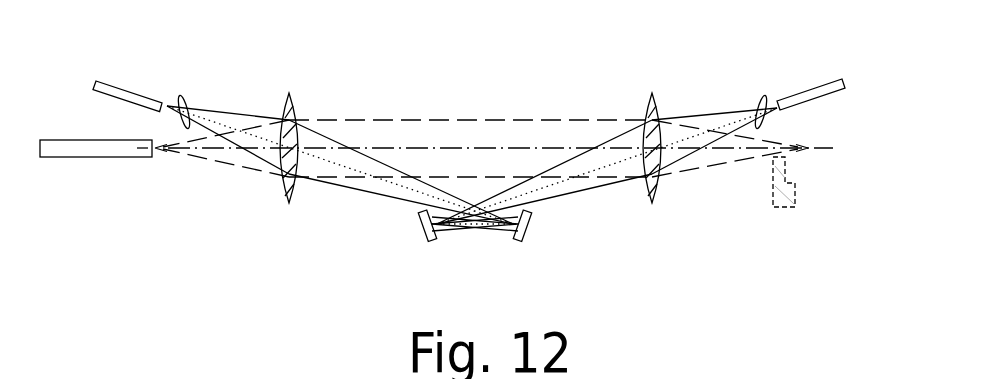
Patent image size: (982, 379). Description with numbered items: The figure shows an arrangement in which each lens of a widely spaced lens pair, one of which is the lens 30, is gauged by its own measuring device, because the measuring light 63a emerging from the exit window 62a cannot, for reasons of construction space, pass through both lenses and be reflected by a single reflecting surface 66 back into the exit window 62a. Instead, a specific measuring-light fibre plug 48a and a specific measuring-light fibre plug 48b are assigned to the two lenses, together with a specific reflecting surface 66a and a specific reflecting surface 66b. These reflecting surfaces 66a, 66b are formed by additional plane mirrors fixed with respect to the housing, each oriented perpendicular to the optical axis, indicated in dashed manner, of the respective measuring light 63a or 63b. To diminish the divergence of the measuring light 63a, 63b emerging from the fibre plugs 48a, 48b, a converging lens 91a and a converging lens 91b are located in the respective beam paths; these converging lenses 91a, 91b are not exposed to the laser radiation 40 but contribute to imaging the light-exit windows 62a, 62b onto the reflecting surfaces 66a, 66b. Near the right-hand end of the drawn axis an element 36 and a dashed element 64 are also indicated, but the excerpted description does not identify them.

The lens 30 is at (301, 128).
The sample plane 36 is at (802, 154).
The laser radiation 40 is at (405, 119).
The measuring-light fibre plug 48a is at (143, 93).
The measuring-light fibre plug 48b is at (800, 92).
The exit window 62a is at (173, 103).
The light-exit window 62b is at (773, 105).
The measuring light 63a is at (275, 118).
The measuring light 63b is at (668, 116).
The aperture block 64 is at (782, 207).
The reflecting surface 66 is at (766, 216).
The reflecting surface 66a is at (527, 233).
The reflecting surface 66b is at (419, 233).
The converging lens 91a is at (192, 123).
The converging lens 91b is at (768, 128).